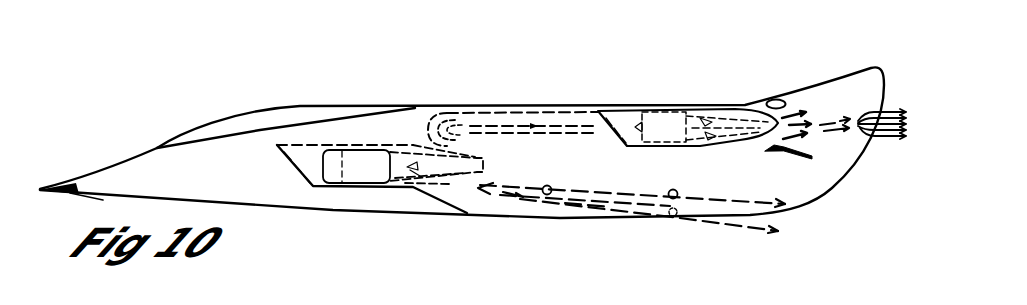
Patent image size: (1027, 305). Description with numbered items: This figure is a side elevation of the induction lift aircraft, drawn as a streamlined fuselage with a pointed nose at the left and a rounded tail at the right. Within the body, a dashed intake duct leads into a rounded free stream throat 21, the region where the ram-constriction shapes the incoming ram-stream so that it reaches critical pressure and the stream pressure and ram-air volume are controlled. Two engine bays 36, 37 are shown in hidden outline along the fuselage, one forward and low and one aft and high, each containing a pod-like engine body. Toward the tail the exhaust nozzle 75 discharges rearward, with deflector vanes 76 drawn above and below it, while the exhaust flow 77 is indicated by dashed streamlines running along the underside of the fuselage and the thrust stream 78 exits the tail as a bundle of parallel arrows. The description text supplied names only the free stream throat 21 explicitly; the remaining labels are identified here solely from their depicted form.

The free stream throat 21 is at (448, 125).
The forward engine bay 36 is at (397, 190).
The aft engine bay 37 is at (658, 123).
The exhaust nozzle 75 is at (810, 115).
The deflector vanes 76 is at (805, 267).
The exhaust flow 77 is at (830, 131).
The thrust stream 78 is at (887, 137).